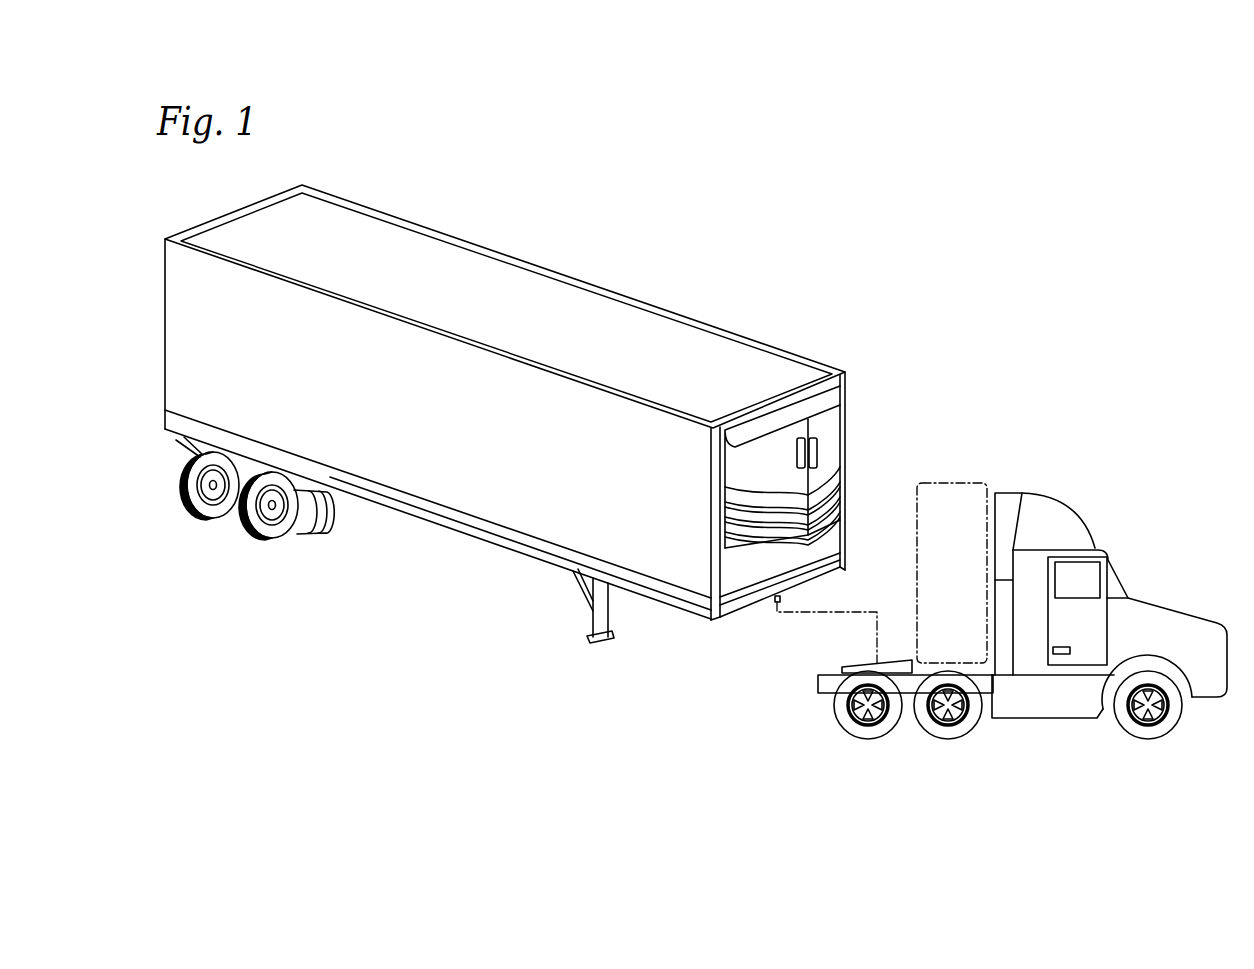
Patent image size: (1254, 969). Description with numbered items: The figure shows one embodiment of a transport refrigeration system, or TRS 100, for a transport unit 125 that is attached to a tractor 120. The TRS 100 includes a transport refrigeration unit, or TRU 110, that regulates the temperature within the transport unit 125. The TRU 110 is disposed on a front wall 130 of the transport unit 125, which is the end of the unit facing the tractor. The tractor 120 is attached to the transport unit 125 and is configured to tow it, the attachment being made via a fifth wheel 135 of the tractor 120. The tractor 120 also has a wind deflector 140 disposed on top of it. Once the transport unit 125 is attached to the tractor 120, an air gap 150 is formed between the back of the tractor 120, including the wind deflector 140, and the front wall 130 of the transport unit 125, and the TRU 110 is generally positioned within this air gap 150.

The TRS 100 is at (913, 242).
The TRU 110 is at (830, 430).
The tractor 120 is at (1162, 608).
The transport unit 125 is at (600, 308).
The front wall 130 is at (827, 388).
The fifth wheel 135 is at (886, 668).
The wind deflector 140 is at (1062, 505).
The air gap 150 is at (968, 488).